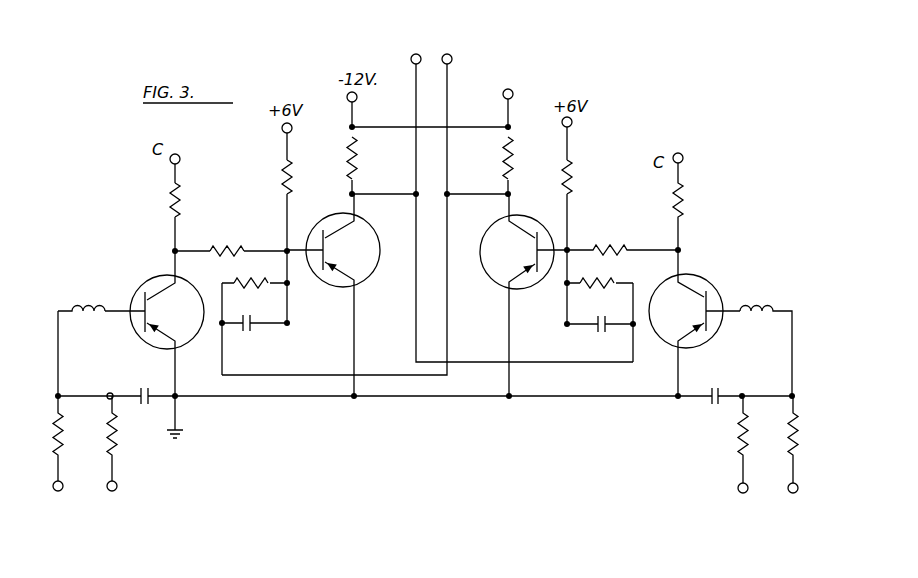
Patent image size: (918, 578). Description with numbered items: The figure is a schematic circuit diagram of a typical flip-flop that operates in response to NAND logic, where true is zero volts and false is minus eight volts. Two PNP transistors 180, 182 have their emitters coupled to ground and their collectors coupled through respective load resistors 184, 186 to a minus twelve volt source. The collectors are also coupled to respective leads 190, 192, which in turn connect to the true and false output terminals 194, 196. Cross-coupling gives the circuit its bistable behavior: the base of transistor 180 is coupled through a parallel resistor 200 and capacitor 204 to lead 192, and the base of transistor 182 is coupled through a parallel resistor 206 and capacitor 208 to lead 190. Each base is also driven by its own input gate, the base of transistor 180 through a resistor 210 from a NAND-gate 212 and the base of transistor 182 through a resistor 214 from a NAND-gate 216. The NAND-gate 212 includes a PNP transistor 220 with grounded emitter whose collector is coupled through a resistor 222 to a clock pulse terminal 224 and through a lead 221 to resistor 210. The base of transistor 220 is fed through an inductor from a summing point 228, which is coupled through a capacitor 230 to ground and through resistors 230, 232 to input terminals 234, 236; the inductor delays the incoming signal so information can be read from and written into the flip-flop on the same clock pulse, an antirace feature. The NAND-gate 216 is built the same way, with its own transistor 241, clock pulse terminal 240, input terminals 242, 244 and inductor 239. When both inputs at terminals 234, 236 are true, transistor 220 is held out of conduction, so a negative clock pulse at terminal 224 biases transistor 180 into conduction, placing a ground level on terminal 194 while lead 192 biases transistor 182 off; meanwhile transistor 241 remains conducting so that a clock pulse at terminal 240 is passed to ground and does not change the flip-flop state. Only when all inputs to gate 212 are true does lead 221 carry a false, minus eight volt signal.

The transistor 180 is at (334, 286).
The transistor 182 is at (492, 277).
The resistor 184 is at (358, 176).
The resistor 186 is at (511, 159).
The lead 190 is at (413, 105).
The lead 192 is at (449, 107).
The true output terminal 194 is at (416, 54).
The false output terminal 196 is at (448, 54).
The resistor 200 is at (251, 281).
The capacitor 204 is at (248, 332).
The resistor 206 is at (583, 284).
The capacitor 208 is at (598, 333).
The resistor 210 is at (234, 248).
The NAND-gate 212 is at (239, 474).
The resistor 214 is at (612, 247).
The NAND-gate 216 is at (703, 459).
The transistor 220 is at (157, 282).
The lead 221 is at (205, 235).
The resistor 222 is at (196, 209).
The clock pulse terminal 224 is at (185, 142).
The summing point 228 is at (93, 301).
The capacitor and resistor 230 is at (140, 428).
The resistor 232 is at (110, 446).
The input terminal 234 is at (55, 491).
The input terminal 236 is at (110, 491).
The inductor 239 is at (761, 305).
The clock pulse terminal 240 is at (684, 158).
The transistor 241 is at (664, 341).
The input terminal 242 is at (790, 494).
The input terminal 244 is at (740, 494).